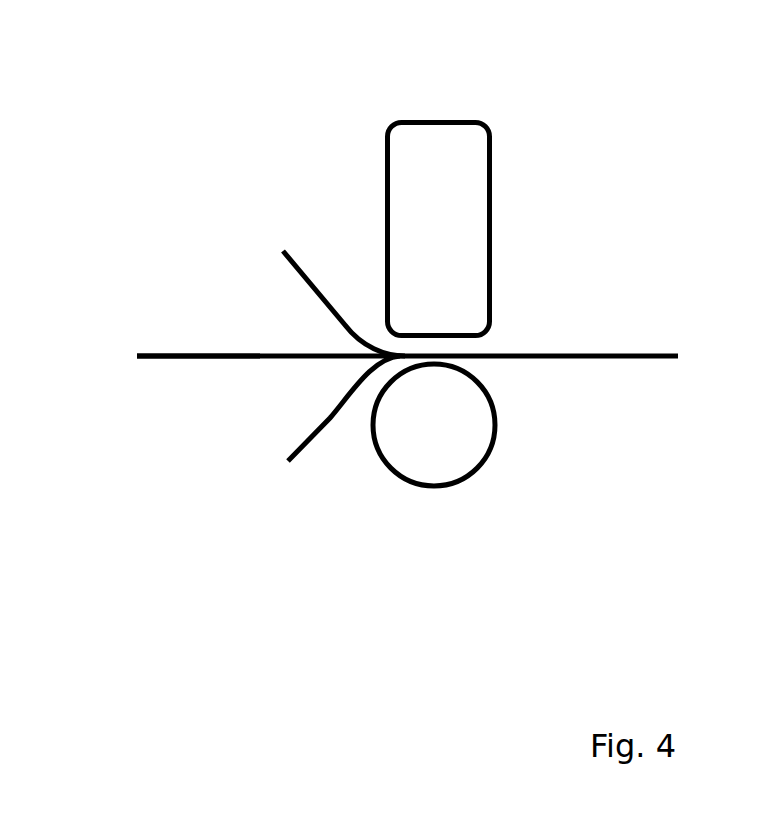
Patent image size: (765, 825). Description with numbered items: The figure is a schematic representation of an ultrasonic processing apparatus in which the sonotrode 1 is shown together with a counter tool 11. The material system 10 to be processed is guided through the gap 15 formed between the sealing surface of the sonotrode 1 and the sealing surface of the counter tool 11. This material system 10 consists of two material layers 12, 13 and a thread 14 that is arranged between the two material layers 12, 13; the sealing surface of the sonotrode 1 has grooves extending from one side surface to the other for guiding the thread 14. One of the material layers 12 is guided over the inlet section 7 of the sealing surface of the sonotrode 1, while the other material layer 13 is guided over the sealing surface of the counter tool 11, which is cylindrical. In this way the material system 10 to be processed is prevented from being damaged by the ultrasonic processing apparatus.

The sonotrode 1 is at (458, 148).
The inlet section 7 is at (387, 330).
The material system 10 is at (583, 358).
The counter tool 11 is at (437, 422).
The material layer 12 is at (296, 244).
The material layer 13 is at (310, 424).
The thread 14 is at (205, 357).
The gap 15 is at (487, 352).